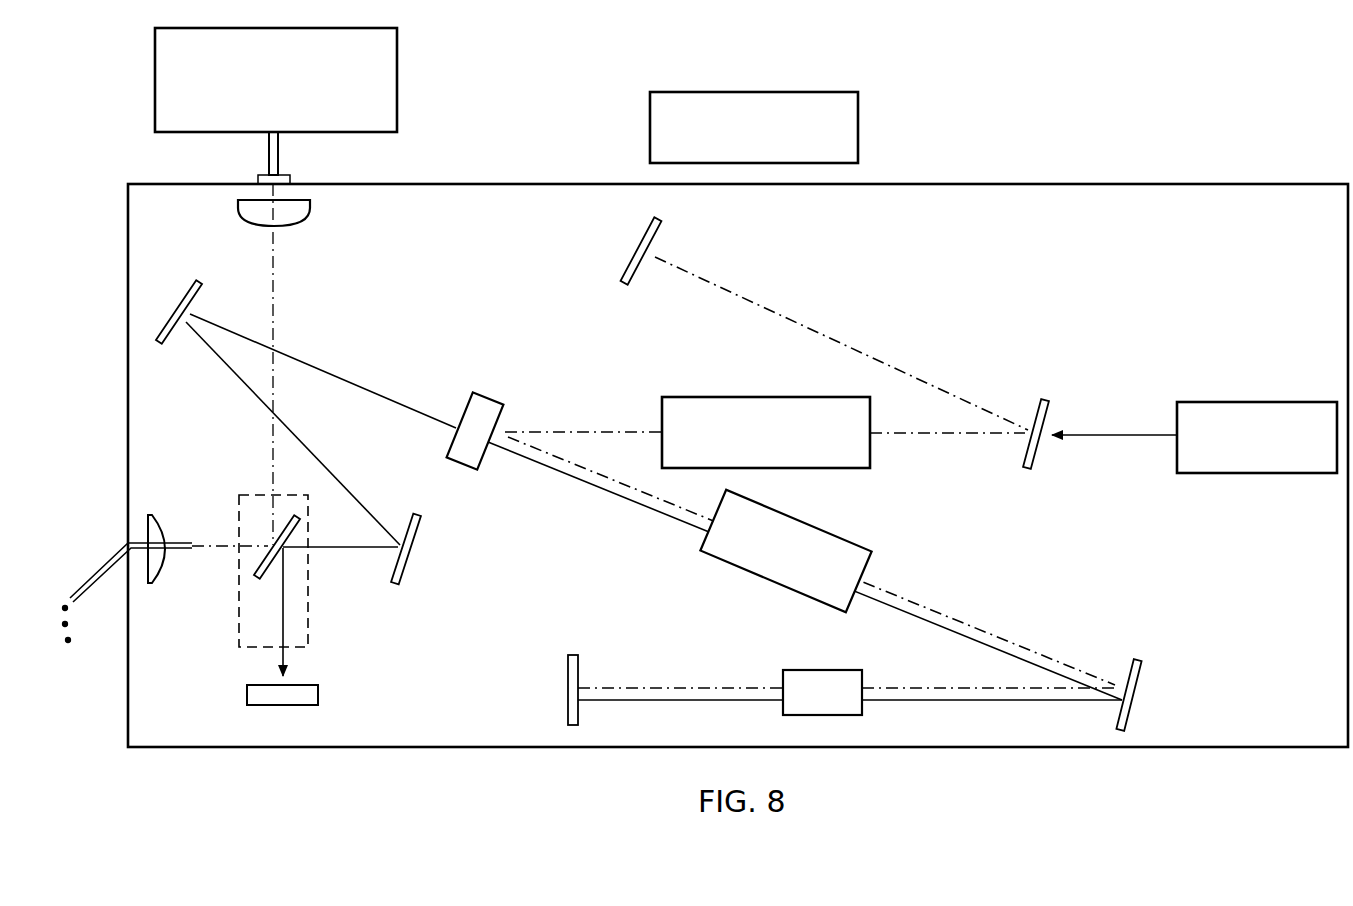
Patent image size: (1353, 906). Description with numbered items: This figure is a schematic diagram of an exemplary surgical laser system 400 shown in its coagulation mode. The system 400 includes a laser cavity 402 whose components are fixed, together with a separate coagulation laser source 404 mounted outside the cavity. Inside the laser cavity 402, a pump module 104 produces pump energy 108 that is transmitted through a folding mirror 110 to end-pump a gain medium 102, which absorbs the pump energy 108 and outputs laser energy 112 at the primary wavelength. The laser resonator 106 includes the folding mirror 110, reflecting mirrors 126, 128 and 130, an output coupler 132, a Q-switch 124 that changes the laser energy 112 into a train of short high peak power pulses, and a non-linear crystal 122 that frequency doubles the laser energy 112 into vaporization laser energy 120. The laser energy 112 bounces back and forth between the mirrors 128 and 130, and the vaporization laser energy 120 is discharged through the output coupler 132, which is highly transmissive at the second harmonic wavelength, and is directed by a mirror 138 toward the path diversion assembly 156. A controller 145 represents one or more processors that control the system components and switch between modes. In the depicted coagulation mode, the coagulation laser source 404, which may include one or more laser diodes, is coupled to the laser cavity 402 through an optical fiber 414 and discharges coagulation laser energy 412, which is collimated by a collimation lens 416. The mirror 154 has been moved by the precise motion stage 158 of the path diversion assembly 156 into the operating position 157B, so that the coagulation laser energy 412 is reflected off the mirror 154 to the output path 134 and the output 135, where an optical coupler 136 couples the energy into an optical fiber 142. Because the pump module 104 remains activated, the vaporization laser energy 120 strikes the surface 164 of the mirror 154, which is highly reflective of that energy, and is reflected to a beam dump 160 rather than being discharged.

The surgical laser system 400 is at (1158, 62).
The laser cavity 402 is at (1063, 184).
The coagulation laser source 404 is at (398, 43).
The optical fiber 414 is at (280, 156).
The collimation lens 416 is at (300, 222).
The coagulation laser energy 412 is at (277, 300).
The controller 145 is at (690, 92).
The mirror 138 is at (188, 292).
The vaporization laser energy 120 is at (322, 373).
The laser energy 112 is at (845, 345).
The output coupler 132 is at (470, 464).
The gain medium 102 is at (763, 397).
The reflecting mirror 130 is at (628, 258).
The folding mirror 110 is at (1048, 400).
The pump module 104 is at (1228, 402).
The pump energy 108 is at (1105, 437).
The Q-switch 124 is at (755, 582).
The reflecting mirror 126 is at (1140, 675).
The laser resonator 106 is at (1112, 550).
The reflecting mirror 128 is at (568, 661).
The non-linear crystal 122 is at (818, 672).
The optical coupler 136 is at (150, 514).
The optical fiber 142 is at (78, 592).
The output 135 is at (124, 516).
The output path 134 is at (210, 520).
The path diversion assembly 156 is at (222, 638).
The operating position 157B is at (328, 650).
The mirror 154 is at (292, 516).
The surface 164 is at (290, 565).
The motion stage 158 is at (308, 593).
The beam dump 160 is at (293, 700).